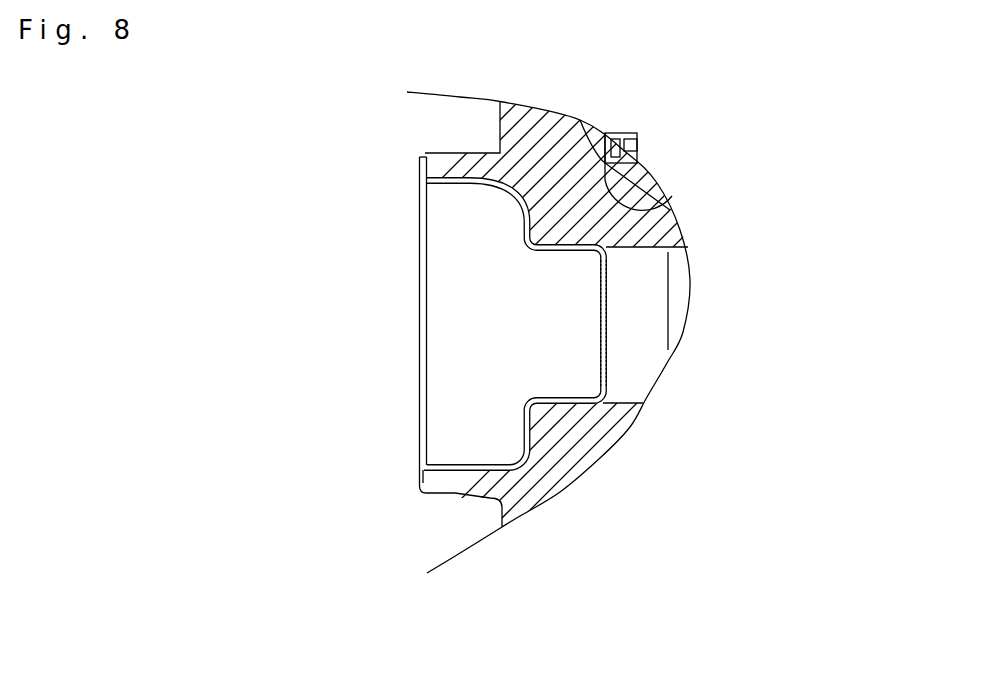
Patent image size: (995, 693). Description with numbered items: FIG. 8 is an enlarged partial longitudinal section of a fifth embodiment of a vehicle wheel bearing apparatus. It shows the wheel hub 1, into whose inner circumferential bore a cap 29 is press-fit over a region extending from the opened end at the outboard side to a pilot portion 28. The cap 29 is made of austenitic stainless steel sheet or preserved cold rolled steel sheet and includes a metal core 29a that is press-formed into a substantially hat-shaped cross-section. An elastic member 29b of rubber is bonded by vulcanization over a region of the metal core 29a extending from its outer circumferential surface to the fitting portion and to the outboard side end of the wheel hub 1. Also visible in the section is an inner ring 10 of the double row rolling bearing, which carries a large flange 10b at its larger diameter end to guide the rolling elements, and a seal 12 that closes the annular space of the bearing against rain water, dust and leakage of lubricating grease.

The wheel hub 1 is at (419, 161).
The seal 12 is at (502, 142).
The large flange 10b is at (524, 207).
The inner ring 10 is at (526, 237).
The metal core 29a is at (600, 290).
The elastic member 29b is at (612, 313).
The cap 29 is at (520, 370).
The pilot portion 28 is at (455, 494).